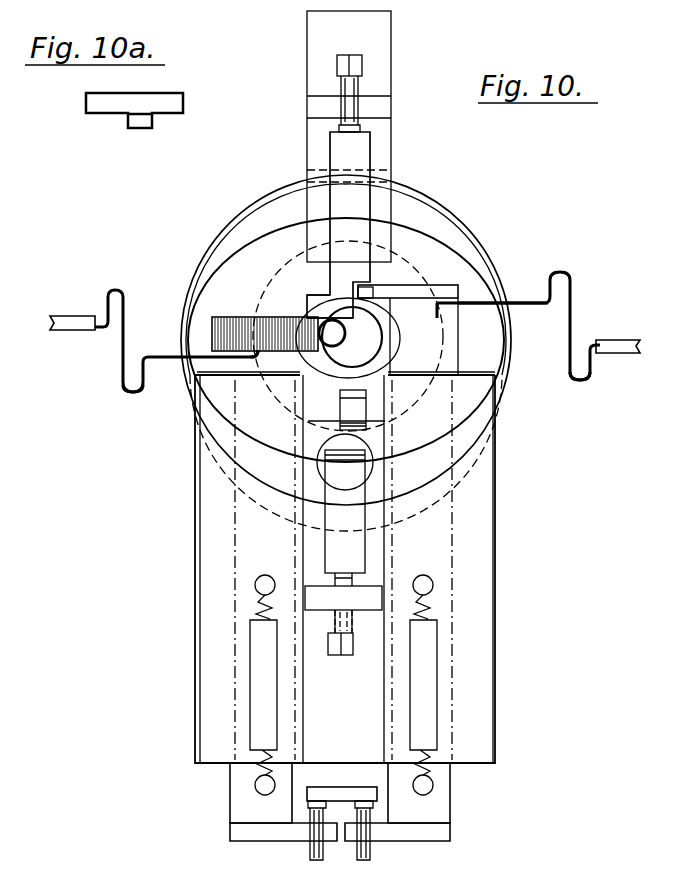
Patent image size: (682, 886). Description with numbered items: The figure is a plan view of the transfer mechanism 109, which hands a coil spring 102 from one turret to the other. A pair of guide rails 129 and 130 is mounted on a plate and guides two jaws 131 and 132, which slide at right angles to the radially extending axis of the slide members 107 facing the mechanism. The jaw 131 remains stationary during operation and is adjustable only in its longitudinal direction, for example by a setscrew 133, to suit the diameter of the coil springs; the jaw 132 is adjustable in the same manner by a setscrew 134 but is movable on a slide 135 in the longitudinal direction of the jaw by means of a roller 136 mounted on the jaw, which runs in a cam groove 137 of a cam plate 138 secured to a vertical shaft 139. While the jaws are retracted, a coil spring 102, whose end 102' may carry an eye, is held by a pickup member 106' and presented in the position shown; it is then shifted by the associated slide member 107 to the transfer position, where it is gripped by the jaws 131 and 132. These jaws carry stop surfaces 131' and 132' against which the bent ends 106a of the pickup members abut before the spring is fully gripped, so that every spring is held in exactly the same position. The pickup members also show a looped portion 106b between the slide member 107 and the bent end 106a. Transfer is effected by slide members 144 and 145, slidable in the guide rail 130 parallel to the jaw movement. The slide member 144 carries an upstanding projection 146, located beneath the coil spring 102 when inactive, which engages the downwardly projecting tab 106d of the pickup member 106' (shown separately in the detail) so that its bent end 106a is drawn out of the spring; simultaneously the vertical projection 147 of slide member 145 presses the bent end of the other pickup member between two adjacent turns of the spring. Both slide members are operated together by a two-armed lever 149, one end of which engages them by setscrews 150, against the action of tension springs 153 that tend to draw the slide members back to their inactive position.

In FIG. 10, the coil spring 102 is at (226, 319).
In FIG. 10, the end of coil spring 102' is at (367, 338).
In FIG. 10A, the pickup member 106' is at (116, 122).
In FIG. 10, the pickup member 106' is at (165, 325).
In FIG. 10, the bent end of pickup member 106a is at (258, 360).
In FIG. 10, the strip loop 106b is at (122, 366).
In FIG. 10A, the downwardly projecting tab 106d is at (138, 122).
In FIG. 10, the slide member 107 is at (63, 316).
In FIG. 10, the transfer mechanism 109 is at (134, 515).
In FIG. 10, the guide rail 129 is at (308, 137).
In FIG. 10, the guide rail 130 is at (480, 748).
In FIG. 10, the jaw 131 is at (369, 225).
In FIG. 10, the stop surface 131' is at (364, 287).
In FIG. 10, the jaw 132 is at (303, 518).
In FIG. 10, the stop surface 132' is at (301, 415).
In FIG. 10, the setscrew 133 is at (361, 66).
In FIG. 10, the setscrew 134 is at (347, 652).
In FIG. 10, the slide 135 is at (368, 590).
In FIG. 10, the roller 136 is at (372, 466).
In FIG. 10, the cam groove 137 is at (232, 262).
In FIG. 10, the cam plate 138 is at (440, 209).
In FIG. 10, the vertical shaft 139 is at (372, 300).
In FIG. 10, the slide member 144 is at (240, 790).
In FIG. 10, the slide member 145 is at (444, 792).
In FIG. 10, the upstanding projection 146 is at (276, 300).
In FIG. 10, the vertical projection 147 is at (460, 287).
In FIG. 10, the two-armed lever 149 is at (333, 788).
In FIG. 10, the setscrews 150 is at (311, 853).
In FIG. 10, the tension springs 153 is at (248, 680).